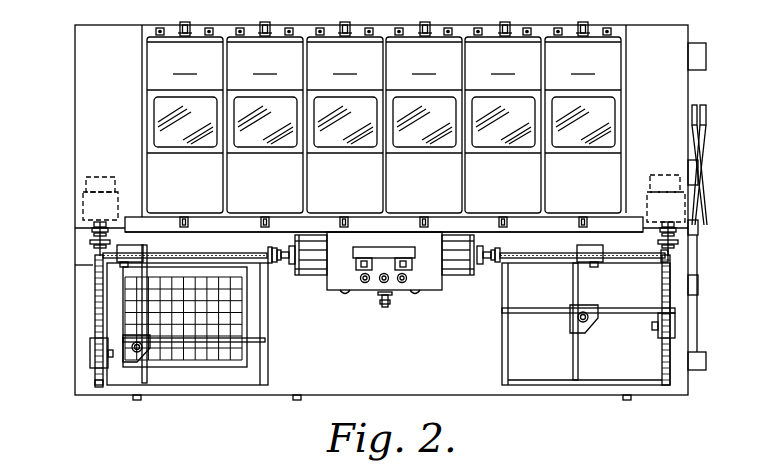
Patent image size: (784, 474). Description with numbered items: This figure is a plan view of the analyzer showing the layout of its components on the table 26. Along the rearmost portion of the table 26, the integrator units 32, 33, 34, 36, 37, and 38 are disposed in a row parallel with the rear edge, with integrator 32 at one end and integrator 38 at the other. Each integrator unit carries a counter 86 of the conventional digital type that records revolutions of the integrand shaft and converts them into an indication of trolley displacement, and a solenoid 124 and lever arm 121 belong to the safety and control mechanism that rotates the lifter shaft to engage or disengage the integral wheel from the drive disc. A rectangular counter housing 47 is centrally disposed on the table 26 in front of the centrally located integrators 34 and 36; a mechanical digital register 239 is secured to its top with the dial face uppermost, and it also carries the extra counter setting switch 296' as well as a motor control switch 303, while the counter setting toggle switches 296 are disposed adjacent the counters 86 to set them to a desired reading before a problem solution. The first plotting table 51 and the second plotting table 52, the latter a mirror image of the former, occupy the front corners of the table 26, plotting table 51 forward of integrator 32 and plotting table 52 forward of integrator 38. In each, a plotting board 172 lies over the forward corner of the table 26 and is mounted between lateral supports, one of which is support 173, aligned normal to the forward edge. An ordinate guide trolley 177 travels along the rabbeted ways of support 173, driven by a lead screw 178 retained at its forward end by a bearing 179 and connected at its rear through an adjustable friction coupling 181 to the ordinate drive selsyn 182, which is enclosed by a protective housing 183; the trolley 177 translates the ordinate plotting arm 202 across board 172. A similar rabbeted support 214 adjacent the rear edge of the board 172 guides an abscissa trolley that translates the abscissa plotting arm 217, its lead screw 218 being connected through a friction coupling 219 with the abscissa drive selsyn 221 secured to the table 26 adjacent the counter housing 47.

The vertical solenoid 124 is at (190, 30).
The lever arm 121 is at (505, 30).
The integrator unit 38 is at (185, 120).
The integrator unit 37 is at (265, 120).
The integrator unit 36 is at (345, 120).
The integrator unit 34 is at (424, 120).
The integrator unit 33 is at (503, 120).
The integrator unit 32 is at (583, 120).
The protective housing 183 is at (82, 160).
The counter 86 is at (265, 217).
The mechanical digital register 239 is at (365, 247).
The ordinate drive selsyn 182 is at (92, 233).
The adjustable friction coupling 181 is at (94, 246).
The rabbeted support 214 is at (166, 253).
The lead screw 218 is at (229, 254).
The lead screw 178 is at (98, 283).
The lateral support 173 is at (82, 305).
The friction coupling 219 is at (280, 264).
The abscissa drive selsyn 221 is at (318, 276).
The counter setting toggle switch 296 is at (369, 310).
The extra counter setting switch 296' is at (408, 307).
The counter housing 47 is at (428, 285).
The motor control switch 303 is at (385, 308).
The second plotting table 52 is at (272, 345).
The first plotting table 51 is at (500, 357).
The ordinate guide trolley 177 is at (92, 348).
The plotting board 172 is at (252, 374).
The table 26 is at (392, 381).
The bearing 179 is at (100, 388).
The abscissa plotting arm 217 is at (575, 275).
The ordinate plotting arm 202 is at (640, 313).